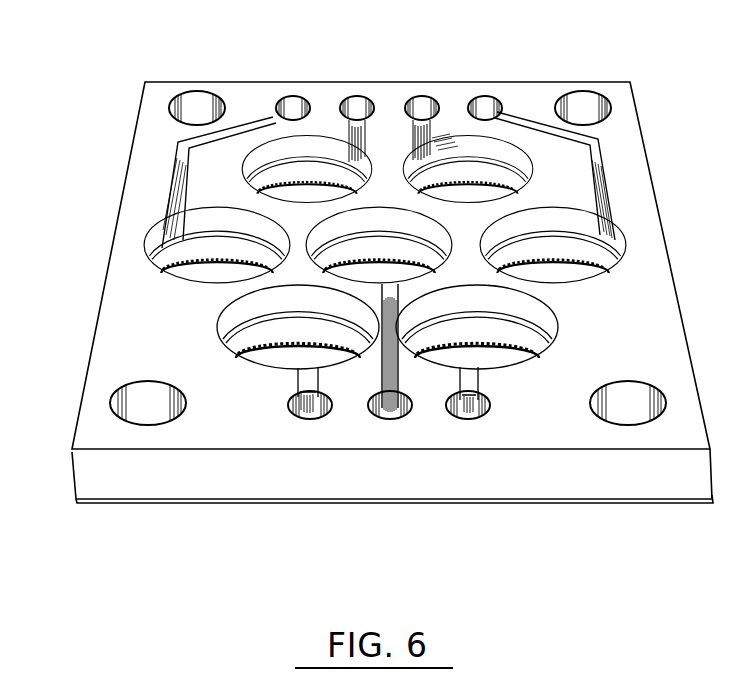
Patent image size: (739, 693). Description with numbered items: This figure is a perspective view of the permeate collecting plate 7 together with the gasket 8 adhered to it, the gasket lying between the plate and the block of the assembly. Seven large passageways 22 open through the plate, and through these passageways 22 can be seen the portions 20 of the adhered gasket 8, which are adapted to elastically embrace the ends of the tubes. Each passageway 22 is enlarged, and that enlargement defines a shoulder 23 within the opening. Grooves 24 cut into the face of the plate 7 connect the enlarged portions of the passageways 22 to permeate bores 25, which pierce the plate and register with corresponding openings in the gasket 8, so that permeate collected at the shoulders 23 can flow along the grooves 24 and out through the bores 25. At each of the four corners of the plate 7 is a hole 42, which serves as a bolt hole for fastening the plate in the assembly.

The permeate collecting plate 7 is at (70, 472).
The gasket 8 is at (158, 504).
The portions of the gasket 20 is at (464, 186).
The passageways 22 is at (487, 357).
The shoulders 23 is at (237, 325).
The grooves 24 is at (175, 178).
The permeate bores 25 is at (293, 98).
The holes 42 is at (112, 402).